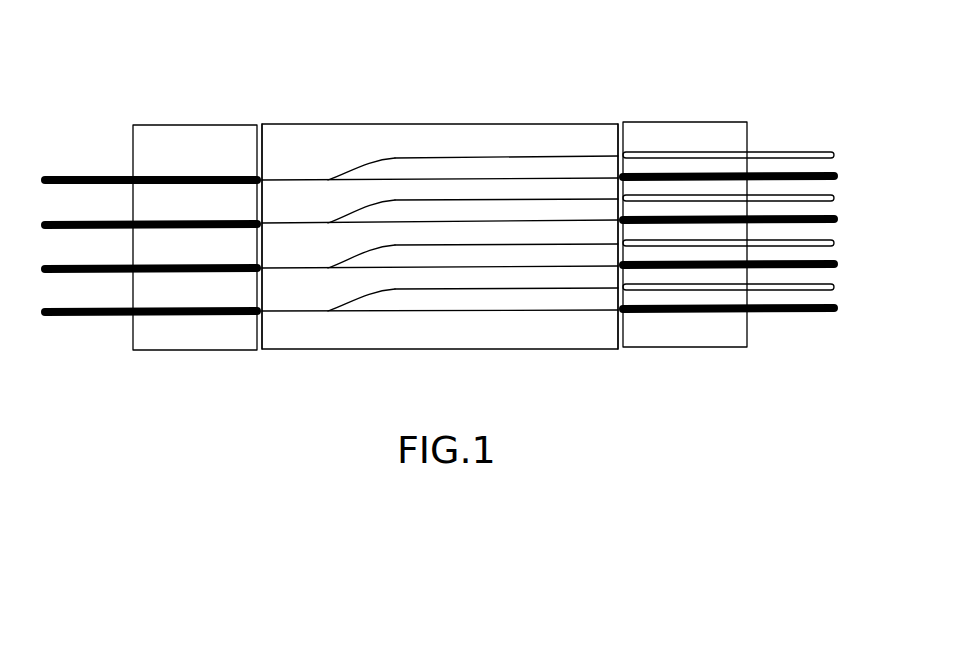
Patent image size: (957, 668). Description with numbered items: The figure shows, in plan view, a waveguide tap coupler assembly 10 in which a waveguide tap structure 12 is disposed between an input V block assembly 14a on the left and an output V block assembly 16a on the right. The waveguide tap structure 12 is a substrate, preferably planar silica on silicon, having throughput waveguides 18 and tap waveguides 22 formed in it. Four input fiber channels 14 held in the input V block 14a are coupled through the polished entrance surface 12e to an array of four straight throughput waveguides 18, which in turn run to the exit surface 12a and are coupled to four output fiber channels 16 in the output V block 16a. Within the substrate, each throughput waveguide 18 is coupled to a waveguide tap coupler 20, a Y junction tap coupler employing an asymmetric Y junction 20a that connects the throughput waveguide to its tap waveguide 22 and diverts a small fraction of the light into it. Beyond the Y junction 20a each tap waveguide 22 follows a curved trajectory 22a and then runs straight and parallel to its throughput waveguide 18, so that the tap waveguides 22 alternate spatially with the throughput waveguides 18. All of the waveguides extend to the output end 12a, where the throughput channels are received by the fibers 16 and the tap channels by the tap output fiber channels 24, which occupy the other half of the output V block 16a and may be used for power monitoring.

The waveguide tap coupler assembly 10 is at (488, 50).
The waveguide tap structure 12 is at (315, 350).
The output or exit surface 12a is at (624, 138).
The input or entrance surface 12e is at (261, 158).
The input fiber channels 14 is at (92, 318).
The input V block assembly 14a is at (177, 350).
The output fiber channels 16 is at (780, 313).
The output V block assembly 16a is at (685, 348).
The throughput waveguides 18 is at (540, 177).
The waveguide tap coupler 20 is at (332, 178).
The asymmetric Y junction 20a is at (361, 234).
The tap waveguides 22 is at (437, 157).
The curved trajectory 22a is at (352, 167).
The tap output fiber channels 24 is at (807, 291).